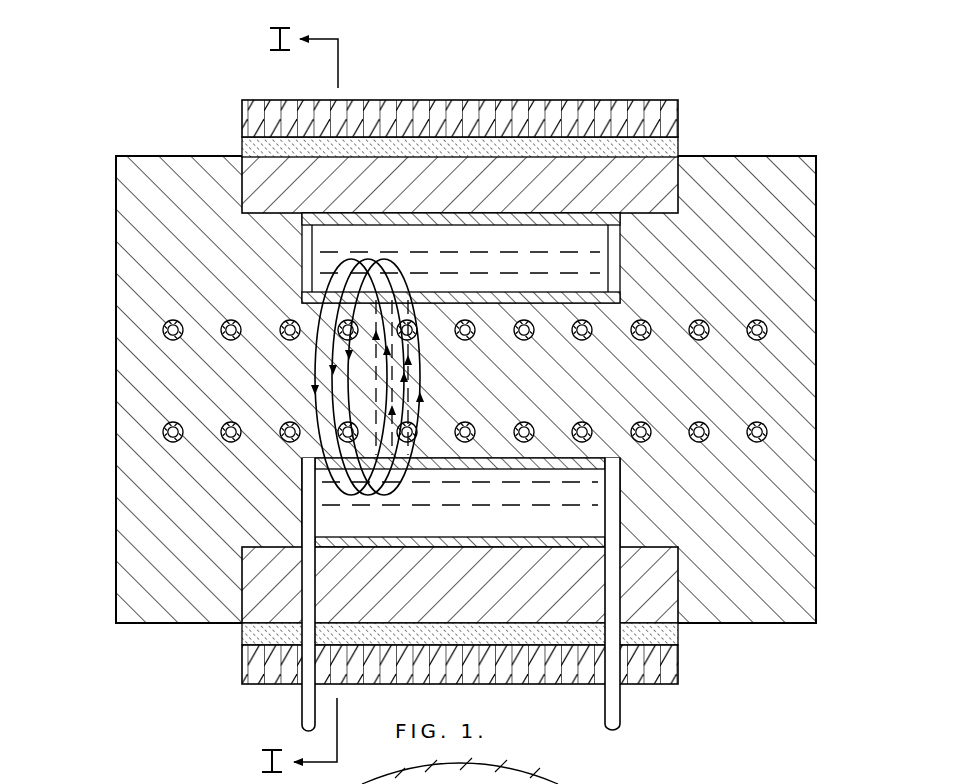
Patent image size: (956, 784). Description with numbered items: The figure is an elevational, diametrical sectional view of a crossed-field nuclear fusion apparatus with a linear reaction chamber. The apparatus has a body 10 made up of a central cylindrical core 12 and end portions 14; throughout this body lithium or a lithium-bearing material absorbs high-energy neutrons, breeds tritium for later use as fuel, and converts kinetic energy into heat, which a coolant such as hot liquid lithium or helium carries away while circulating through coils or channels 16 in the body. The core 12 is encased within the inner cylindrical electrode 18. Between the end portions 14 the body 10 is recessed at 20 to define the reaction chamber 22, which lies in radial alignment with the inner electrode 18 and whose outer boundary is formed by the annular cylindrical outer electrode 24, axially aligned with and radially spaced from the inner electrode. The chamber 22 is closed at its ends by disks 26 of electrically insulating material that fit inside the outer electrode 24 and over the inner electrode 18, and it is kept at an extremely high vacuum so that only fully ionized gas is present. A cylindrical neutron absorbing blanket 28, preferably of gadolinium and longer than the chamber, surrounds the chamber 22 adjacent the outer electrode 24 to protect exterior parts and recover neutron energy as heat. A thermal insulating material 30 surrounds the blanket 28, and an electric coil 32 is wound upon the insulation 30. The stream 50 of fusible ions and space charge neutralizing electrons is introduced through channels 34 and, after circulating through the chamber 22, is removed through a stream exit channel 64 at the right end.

The body 10 is at (465, 395).
The central cylindrical core 12 is at (501, 396).
The end portions 14 is at (140, 417).
The coils or channels 16 is at (224, 462).
The inner cylindrical electrode 18 is at (538, 304).
The recess 20 is at (622, 481).
The reaction chamber 22 is at (486, 529).
The annular cylindrical outer electrode 24 is at (465, 545).
The disks of electrically insulating material 26 is at (620, 256).
The neutron absorbing blanket 28 is at (665, 586).
The thermal insulating material 30 is at (678, 155).
The electric coil 32 is at (557, 100).
The channels 34 is at (320, 582).
The stream of fusible ions and space charge neutralizing electrons 50 is at (490, 258).
The stream exit channel 64 is at (623, 712).